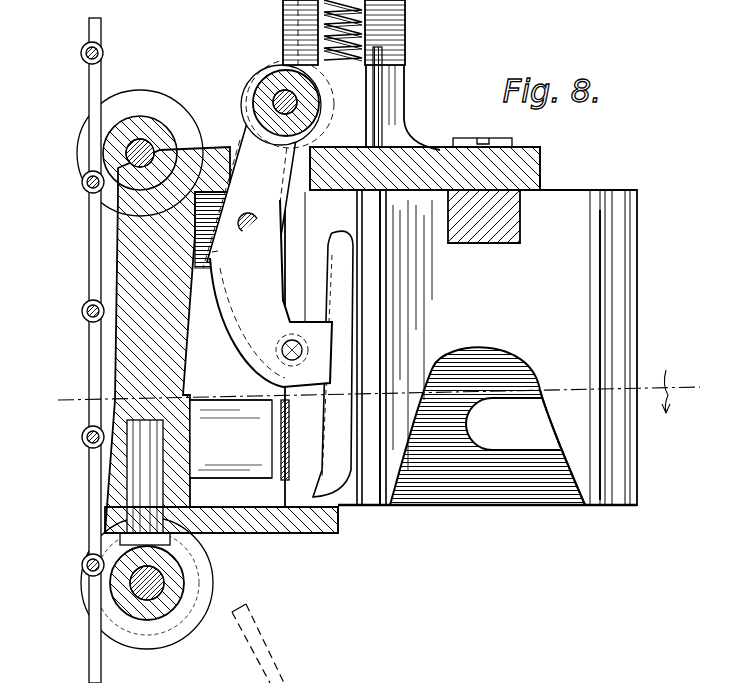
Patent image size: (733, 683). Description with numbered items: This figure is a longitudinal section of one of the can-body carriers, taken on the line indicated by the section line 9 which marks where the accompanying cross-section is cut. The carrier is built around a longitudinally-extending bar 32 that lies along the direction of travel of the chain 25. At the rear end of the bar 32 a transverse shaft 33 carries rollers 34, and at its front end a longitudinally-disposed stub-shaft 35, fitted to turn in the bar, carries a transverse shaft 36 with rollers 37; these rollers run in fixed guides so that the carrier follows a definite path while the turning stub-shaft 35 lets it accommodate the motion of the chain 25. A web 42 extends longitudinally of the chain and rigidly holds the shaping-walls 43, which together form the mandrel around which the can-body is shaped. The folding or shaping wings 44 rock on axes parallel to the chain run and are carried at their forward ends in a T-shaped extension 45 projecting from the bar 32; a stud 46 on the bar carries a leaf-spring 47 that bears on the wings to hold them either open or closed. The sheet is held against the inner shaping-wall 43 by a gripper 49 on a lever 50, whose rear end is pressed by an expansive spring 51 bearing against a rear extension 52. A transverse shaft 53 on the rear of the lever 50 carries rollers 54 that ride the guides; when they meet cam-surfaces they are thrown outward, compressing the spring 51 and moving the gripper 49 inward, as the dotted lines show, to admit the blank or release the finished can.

The section line 9- 9 is at (371, 391).
The chain 25 is at (90, 660).
The longitudinally-extending bar 32 is at (170, 352).
The transverse shaft 33 is at (125, 152).
The rollers 34 is at (168, 113).
The stub-shaft 35 is at (140, 480).
The transverse shaft 36 is at (147, 587).
The rollers 37 is at (177, 628).
The web 42 is at (487, 410).
The rigid shaping-walls 43 is at (373, 333).
The folding or shaping wings 44 is at (505, 500).
The T-shaped extension 45 is at (293, 523).
The stud 46 is at (252, 438).
The leaf-spring 47 is at (282, 465).
The gripper 49 is at (345, 490).
The lever 50 is at (271, 293).
The spring 51 is at (338, 60).
The rear extension 52 is at (400, 37).
The transverse shaft 53 is at (283, 100).
The rollers 54 is at (248, 72).